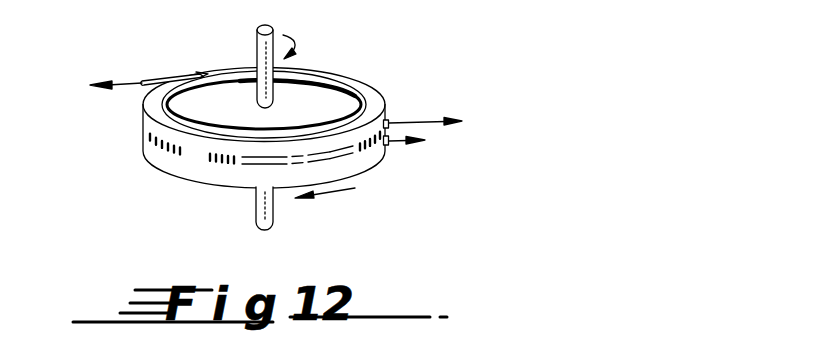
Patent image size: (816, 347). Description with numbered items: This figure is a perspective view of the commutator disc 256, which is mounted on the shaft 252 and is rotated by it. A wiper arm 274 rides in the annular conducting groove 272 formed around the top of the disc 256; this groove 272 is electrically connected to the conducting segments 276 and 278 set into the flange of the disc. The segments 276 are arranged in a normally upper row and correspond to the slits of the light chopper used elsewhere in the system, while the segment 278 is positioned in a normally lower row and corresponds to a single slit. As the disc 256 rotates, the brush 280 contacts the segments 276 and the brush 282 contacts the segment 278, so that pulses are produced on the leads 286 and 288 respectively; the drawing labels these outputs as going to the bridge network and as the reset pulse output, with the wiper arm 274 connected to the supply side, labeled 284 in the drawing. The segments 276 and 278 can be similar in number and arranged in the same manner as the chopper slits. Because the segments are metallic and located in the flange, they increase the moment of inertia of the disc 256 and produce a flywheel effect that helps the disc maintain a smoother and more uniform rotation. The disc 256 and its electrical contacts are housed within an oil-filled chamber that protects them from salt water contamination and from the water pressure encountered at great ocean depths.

The shaft 252 is at (255, 43).
The commutator disc 256 is at (355, 81).
The annular conducting groove 272 is at (312, 76).
The wiper arm 274 is at (167, 77).
The conducting segments 276 is at (150, 137).
The conducting segment 278 is at (198, 164).
The brush 280 is at (389, 123).
The brush 282 is at (384, 150).
The B+ supply lead 284 is at (120, 82).
The lead 286 is at (437, 124).
The lead 288 is at (392, 142).